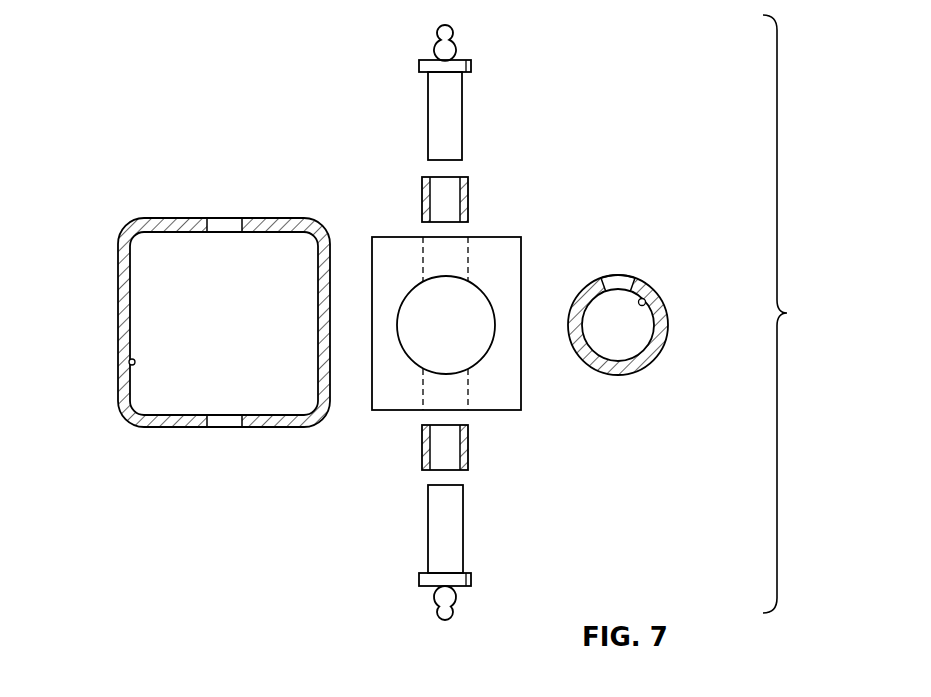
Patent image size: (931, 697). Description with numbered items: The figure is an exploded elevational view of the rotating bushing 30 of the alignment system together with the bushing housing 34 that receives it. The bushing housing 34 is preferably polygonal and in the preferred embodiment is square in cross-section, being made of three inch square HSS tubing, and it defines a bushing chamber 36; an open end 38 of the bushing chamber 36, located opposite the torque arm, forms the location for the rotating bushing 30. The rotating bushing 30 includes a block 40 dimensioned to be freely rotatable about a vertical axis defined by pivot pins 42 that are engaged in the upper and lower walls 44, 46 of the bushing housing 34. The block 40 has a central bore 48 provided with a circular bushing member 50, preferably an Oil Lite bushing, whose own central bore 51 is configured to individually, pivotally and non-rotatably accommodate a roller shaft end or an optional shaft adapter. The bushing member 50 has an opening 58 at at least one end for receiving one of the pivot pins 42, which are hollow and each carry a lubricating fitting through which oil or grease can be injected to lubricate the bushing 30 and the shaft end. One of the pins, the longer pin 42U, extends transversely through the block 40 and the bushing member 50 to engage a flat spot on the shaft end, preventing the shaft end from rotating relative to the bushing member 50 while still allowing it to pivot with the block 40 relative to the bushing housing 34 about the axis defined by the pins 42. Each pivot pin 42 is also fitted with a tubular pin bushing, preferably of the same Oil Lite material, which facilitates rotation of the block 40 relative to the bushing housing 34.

The rotating bushing 30 is at (558, 204).
The bushing housing 34 is at (130, 419).
The bushing chamber 36 is at (129, 365).
The open end 38 is at (270, 218).
The block 40 is at (512, 262).
The pivot pin 42 is at (465, 526).
The longer pivot pin 42U is at (463, 118).
The upper wall 44 is at (168, 218).
The lower wall 46 is at (167, 428).
The central bore 48 is at (487, 349).
The bushing member 50 is at (658, 349).
The central bore 51 is at (645, 302).
The opening 58 is at (621, 279).